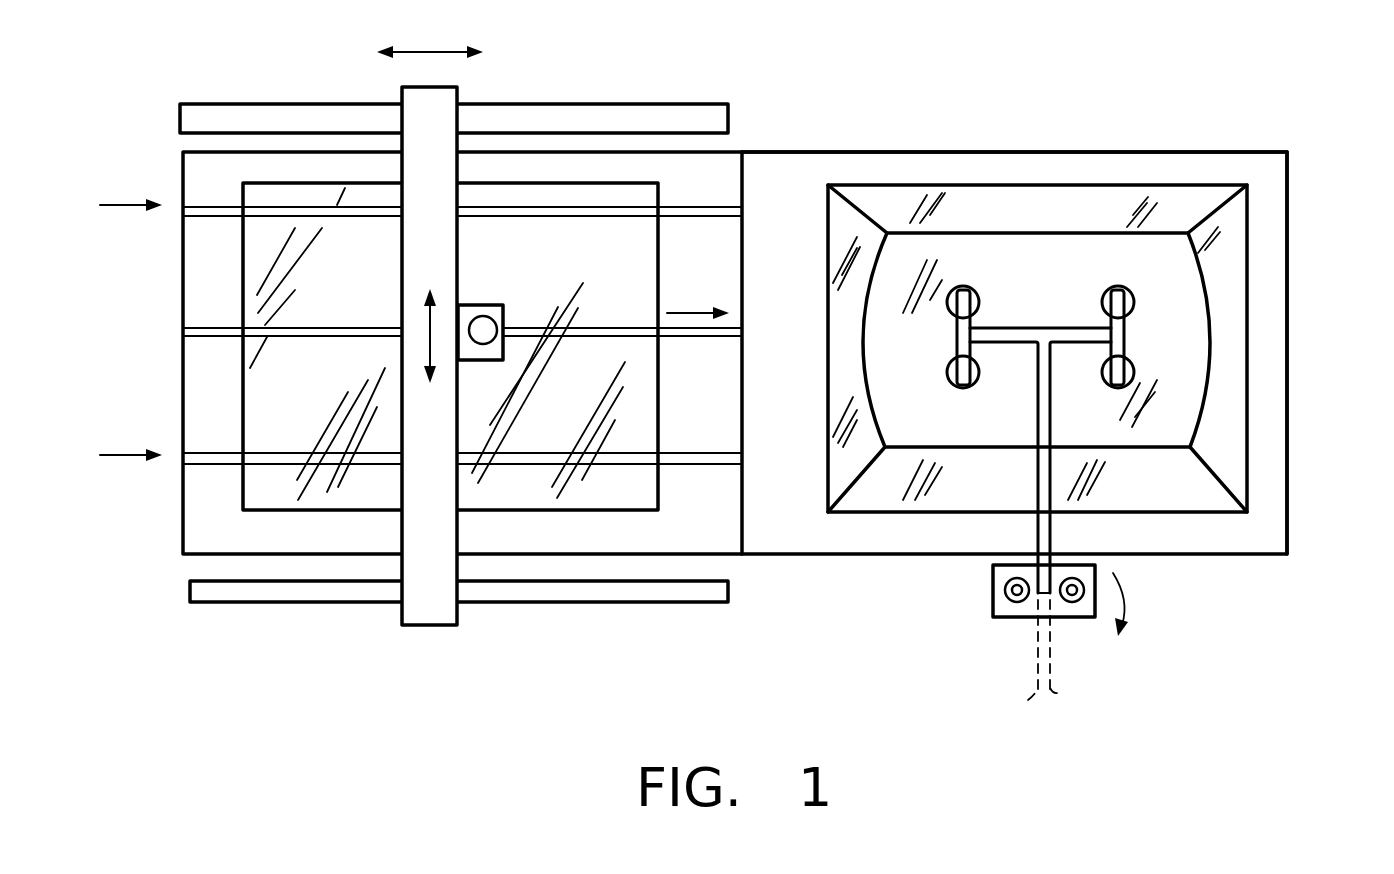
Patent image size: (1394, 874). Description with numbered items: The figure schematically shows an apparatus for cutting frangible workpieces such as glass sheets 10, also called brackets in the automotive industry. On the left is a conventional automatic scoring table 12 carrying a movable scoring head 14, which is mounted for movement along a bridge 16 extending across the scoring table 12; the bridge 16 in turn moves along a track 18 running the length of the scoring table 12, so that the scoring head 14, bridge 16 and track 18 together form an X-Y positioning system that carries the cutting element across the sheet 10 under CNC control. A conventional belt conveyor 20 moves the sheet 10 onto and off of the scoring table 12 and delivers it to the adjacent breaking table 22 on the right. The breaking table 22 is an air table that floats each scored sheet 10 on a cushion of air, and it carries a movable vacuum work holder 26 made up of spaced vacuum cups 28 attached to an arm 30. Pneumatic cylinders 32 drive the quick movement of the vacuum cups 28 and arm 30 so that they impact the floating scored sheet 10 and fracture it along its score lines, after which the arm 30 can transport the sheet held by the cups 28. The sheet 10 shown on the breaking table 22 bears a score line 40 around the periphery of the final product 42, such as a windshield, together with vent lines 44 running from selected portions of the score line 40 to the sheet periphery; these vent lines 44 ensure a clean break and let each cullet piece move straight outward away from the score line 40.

The glass sheet 10 is at (1013, 185).
The scoring table 12 is at (165, 545).
The scoring head 14 is at (493, 305).
The bridge 16 is at (400, 300).
The track 18 is at (597, 104).
The conveyor 20 is at (705, 212).
The breaking table 22 is at (1138, 152).
The vacuum work holder 26 is at (983, 597).
The vacuum cups 28 is at (970, 292).
The arm 30 is at (1070, 328).
The pneumatic cylinders 32 is at (1013, 604).
The score line 40 is at (1207, 392).
The final product 42 is at (927, 360).
The vent lines 44 is at (862, 210).